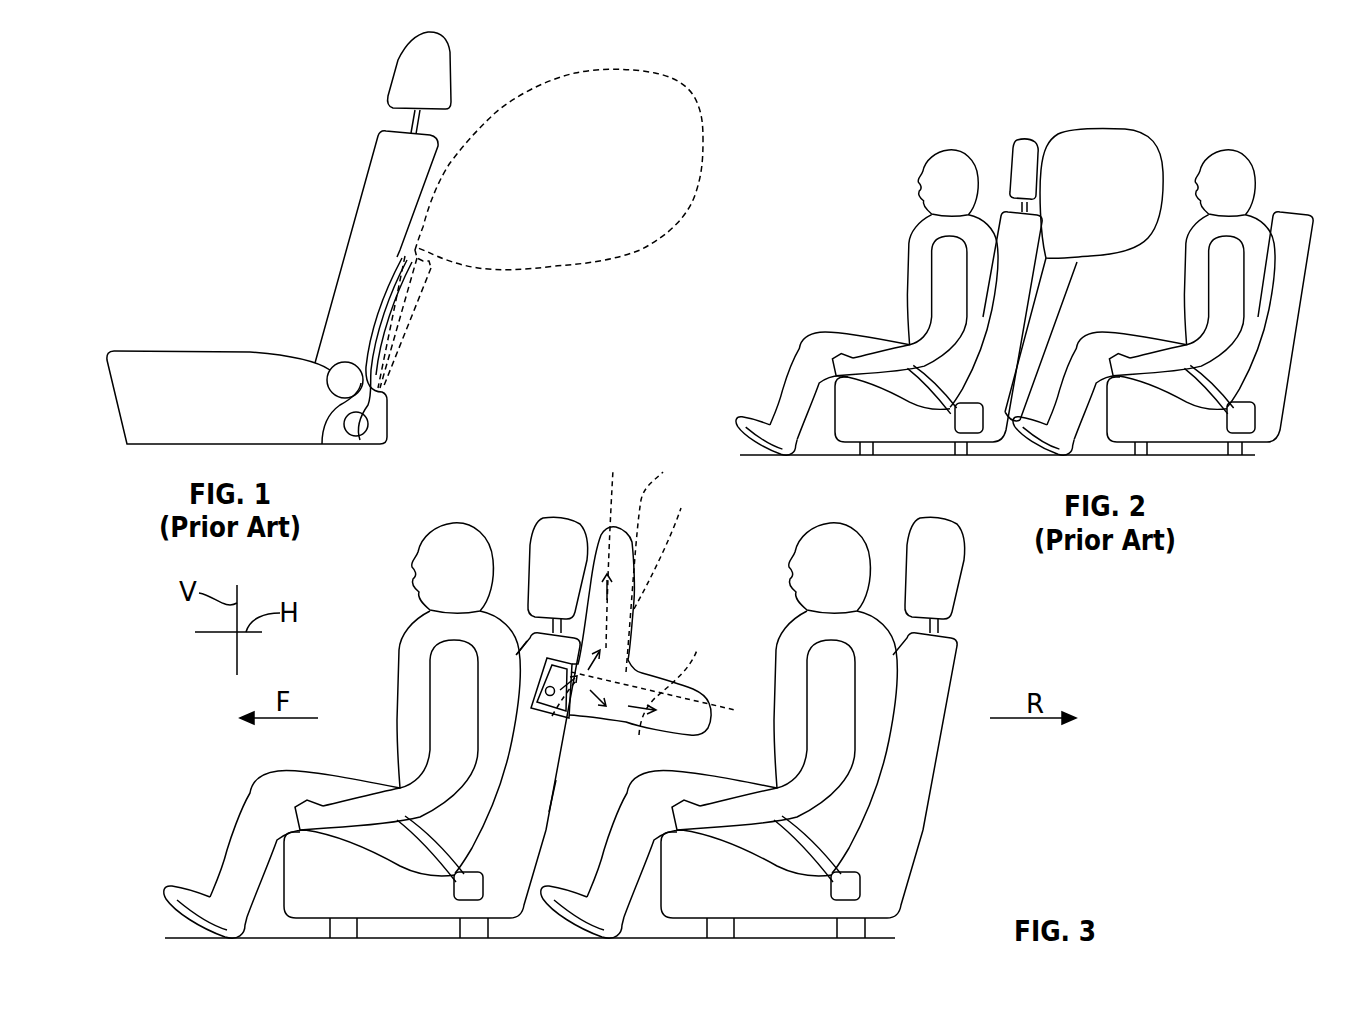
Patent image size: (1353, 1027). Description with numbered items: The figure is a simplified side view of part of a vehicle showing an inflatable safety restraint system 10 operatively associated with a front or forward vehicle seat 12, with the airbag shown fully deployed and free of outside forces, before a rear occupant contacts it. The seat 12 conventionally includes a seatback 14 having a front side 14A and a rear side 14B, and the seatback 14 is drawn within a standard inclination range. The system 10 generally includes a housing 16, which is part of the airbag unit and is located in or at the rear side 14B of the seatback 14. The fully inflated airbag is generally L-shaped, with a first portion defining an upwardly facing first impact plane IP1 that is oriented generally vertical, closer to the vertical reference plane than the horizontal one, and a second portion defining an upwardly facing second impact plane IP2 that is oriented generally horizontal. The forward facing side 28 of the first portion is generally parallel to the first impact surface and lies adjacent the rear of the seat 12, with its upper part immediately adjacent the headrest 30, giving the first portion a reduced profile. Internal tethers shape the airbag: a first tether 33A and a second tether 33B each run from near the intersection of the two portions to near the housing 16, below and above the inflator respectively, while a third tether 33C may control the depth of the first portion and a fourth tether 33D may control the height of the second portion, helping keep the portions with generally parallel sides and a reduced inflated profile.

The inflatable safety restraint system 10 is at (634, 606).
The vehicle seat 12 is at (661, 680).
The seatback 14 is at (512, 757).
The front side 14A is at (533, 677).
The rear side 14B is at (553, 812).
The housing 16 is at (515, 749).
The forward facing side 28 is at (546, 656).
The headrest 30 is at (549, 520).
The first tether 33A is at (552, 716).
The second tether 33B is at (672, 546).
The third tether 33C is at (611, 546).
The fourth tether 33D is at (686, 690).
The first impact plane IP1 is at (663, 472).
The second impact plane IP2 is at (677, 675).